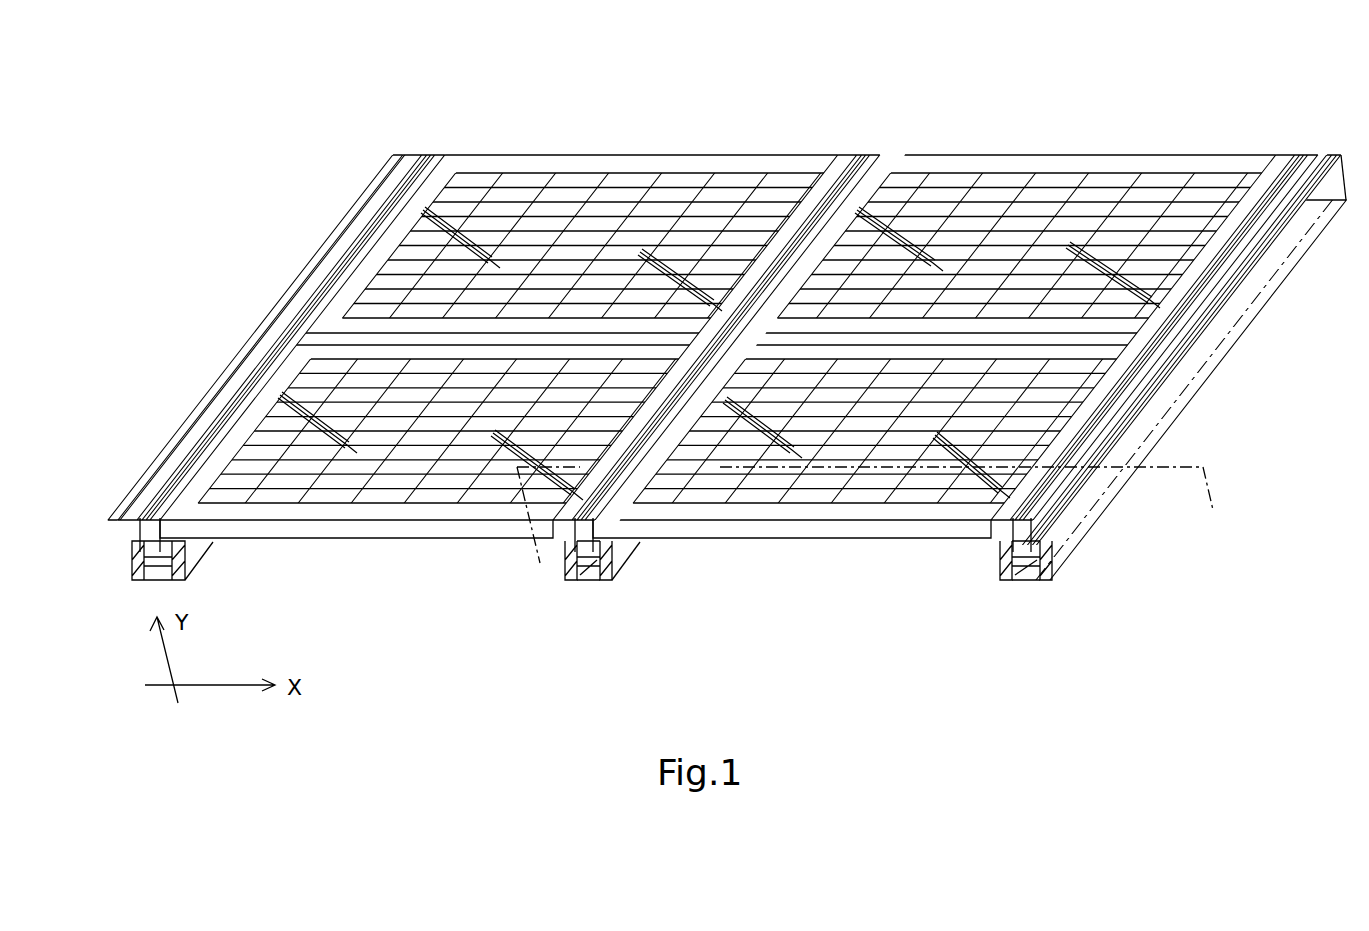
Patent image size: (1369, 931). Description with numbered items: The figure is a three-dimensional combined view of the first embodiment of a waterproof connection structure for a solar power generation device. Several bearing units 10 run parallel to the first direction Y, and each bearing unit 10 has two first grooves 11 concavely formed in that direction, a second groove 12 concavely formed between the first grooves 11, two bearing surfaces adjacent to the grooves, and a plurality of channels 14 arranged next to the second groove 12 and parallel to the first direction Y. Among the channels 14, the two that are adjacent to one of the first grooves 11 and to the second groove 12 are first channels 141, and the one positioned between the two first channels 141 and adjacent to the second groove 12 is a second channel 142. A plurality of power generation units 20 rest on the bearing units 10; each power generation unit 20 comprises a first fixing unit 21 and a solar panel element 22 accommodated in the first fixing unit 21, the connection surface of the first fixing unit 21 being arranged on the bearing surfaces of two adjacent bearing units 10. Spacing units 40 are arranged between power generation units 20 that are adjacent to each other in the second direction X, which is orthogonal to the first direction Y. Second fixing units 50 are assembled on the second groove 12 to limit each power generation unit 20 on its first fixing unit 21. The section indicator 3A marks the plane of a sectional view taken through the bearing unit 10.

The bearing unit 10 is at (1185, 398).
The first groove 11 is at (1003, 552).
The second groove 12 is at (1030, 550).
The channel 14 is at (592, 629).
The first channel 141 is at (570, 583).
The second channel 142 is at (593, 601).
The power generation unit 20 is at (1084, 156).
The first fixing unit 21 is at (441, 178).
The solar panel element 22 is at (652, 210).
The spacing unit 40 is at (1153, 343).
The second fixing unit 50 is at (352, 237).
The section line 3A is at (538, 567).